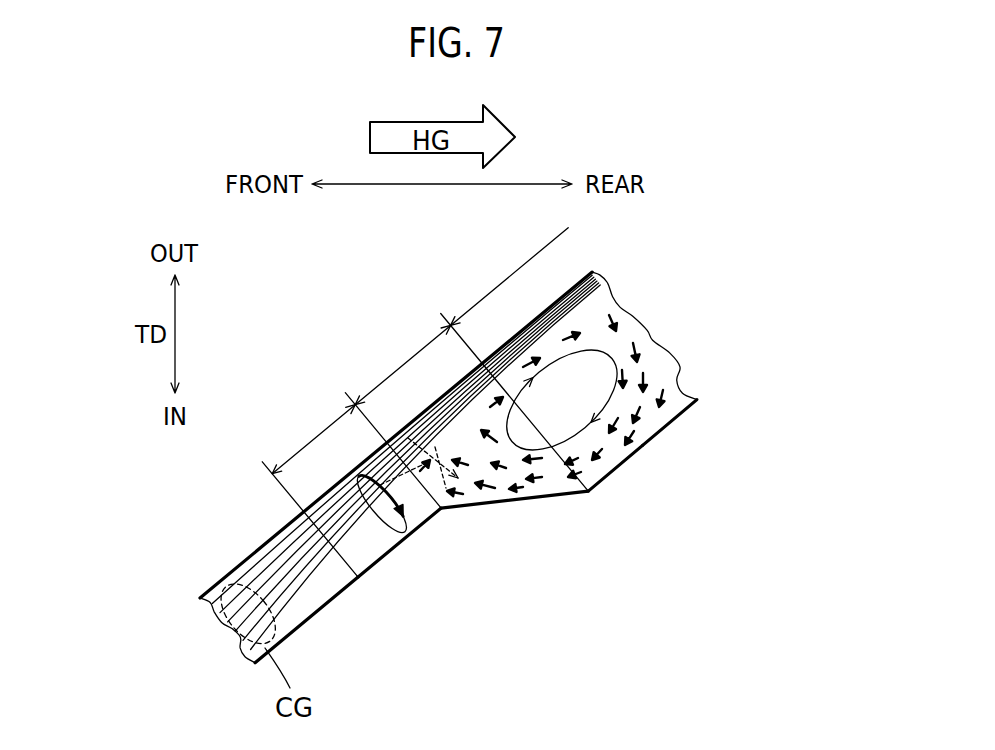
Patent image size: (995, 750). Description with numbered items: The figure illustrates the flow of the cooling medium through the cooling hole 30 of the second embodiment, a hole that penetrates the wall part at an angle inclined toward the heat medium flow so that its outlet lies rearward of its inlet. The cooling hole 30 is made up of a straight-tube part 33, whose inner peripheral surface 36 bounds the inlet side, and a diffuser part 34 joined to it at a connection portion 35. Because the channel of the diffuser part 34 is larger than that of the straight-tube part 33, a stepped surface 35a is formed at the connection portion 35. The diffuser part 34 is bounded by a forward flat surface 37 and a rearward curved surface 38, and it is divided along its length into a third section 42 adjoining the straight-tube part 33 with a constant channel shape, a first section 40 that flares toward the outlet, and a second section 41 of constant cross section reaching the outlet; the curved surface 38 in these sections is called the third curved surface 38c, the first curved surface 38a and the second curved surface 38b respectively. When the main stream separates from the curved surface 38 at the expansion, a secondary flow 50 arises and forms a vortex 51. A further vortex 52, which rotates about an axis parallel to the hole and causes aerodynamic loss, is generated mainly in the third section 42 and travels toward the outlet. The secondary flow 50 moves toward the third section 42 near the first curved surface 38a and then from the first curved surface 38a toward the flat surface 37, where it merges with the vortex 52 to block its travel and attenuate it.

The cooling hole 30 is at (309, 298).
The straight-tube part 33 is at (305, 623).
The diffuser part 34 is at (618, 467).
The connection portion 35 is at (364, 608).
The stepped surface 35a is at (322, 513).
The inner peripheral surface 36 is at (243, 562).
The flat surface 37 is at (485, 348).
The curved surface 38 is at (556, 449).
The first curved surface 38a is at (533, 500).
The second curved surface 38b is at (676, 420).
The third curved surface 38c is at (425, 522).
The first section 40 is at (397, 368).
The second section 41 is at (512, 275).
The third section 42 is at (332, 424).
The secondary flow 50 is at (645, 373).
The vortex 51 is at (605, 345).
The vortex 52 is at (382, 522).